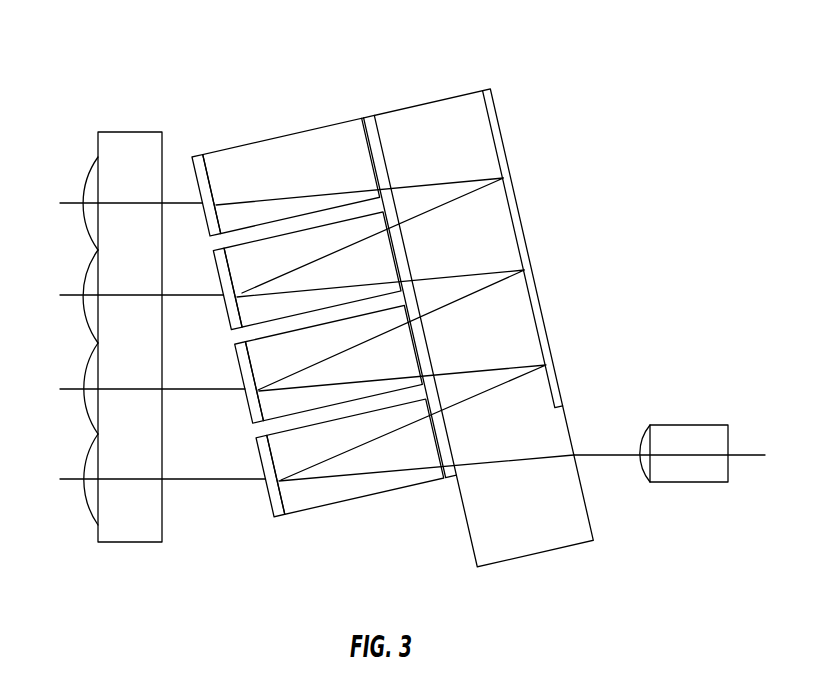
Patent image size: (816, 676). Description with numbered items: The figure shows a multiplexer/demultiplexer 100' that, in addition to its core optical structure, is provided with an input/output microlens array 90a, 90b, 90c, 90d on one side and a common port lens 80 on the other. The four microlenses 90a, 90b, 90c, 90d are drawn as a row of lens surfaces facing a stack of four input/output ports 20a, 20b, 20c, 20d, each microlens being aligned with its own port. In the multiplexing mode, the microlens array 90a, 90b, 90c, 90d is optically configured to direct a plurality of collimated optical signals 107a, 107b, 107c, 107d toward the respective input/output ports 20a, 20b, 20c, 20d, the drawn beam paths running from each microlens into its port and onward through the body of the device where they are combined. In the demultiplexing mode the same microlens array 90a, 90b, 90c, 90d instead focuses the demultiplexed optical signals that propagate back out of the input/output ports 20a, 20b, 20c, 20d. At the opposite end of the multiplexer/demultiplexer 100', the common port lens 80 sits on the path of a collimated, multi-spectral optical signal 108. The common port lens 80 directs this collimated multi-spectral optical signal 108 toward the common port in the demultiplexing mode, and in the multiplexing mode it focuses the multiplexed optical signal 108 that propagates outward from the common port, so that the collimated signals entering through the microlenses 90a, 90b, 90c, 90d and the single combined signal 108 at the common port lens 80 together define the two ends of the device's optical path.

The multiplexer/demultiplexer 100' is at (403, 293).
The input/output port 20a is at (264, 486).
The input/output port 20b is at (243, 392).
The input/output port 20c is at (223, 294).
The input/output port 20d is at (202, 208).
The input/output microlens 90a is at (84, 475).
The input/output microlens 90b is at (84, 378).
The input/output microlens 90c is at (84, 283).
The input/output microlens 90d is at (84, 188).
The collimated optical signal 107a is at (212, 482).
The collimated optical signal 107b is at (195, 391).
The collimated optical signal 107c is at (198, 298).
The collimated optical signal 107d is at (172, 201).
The multi-spectral optical signal 108 is at (590, 452).
The common port lens 80 is at (643, 435).